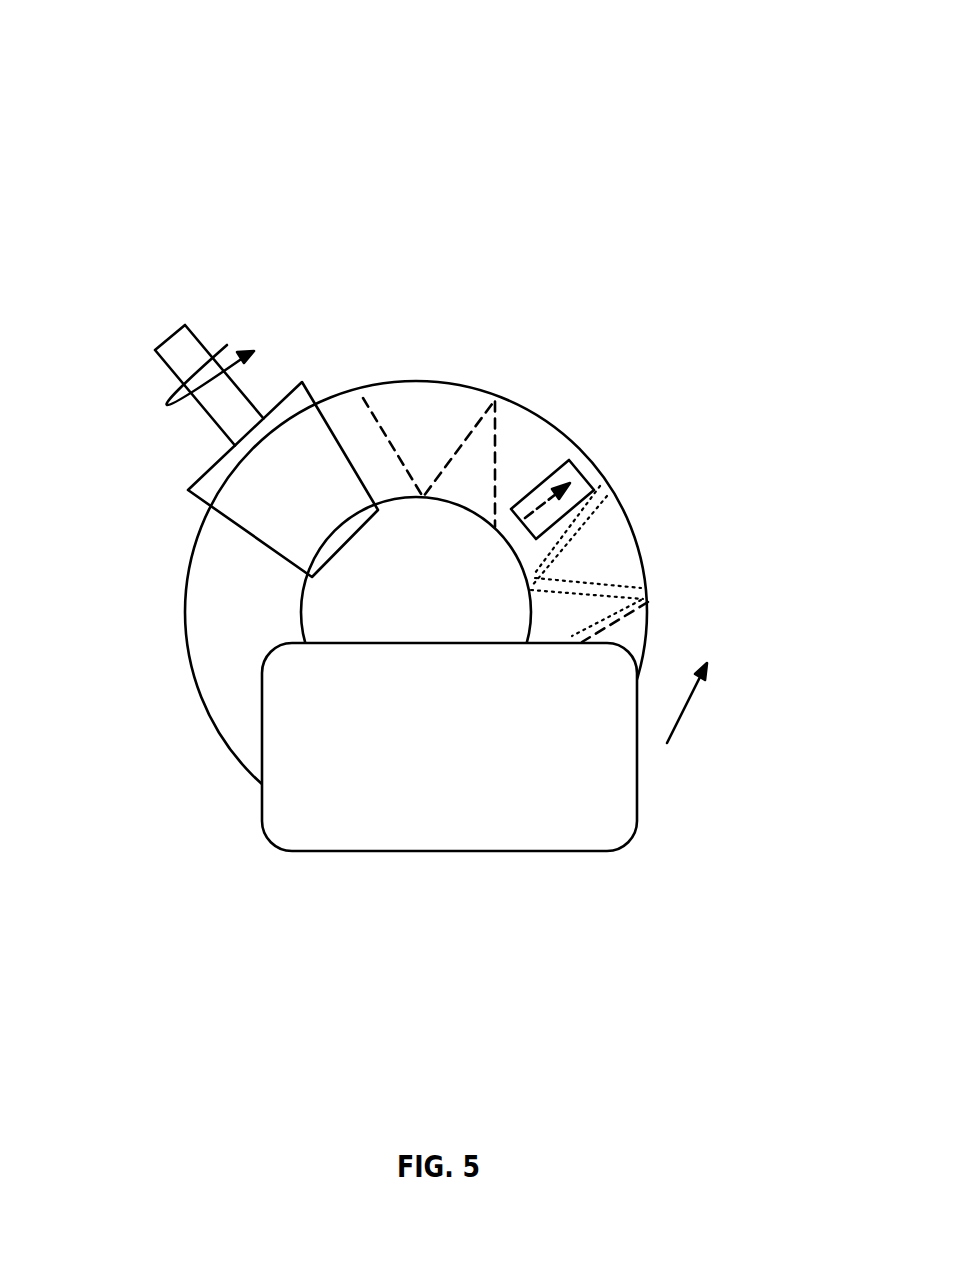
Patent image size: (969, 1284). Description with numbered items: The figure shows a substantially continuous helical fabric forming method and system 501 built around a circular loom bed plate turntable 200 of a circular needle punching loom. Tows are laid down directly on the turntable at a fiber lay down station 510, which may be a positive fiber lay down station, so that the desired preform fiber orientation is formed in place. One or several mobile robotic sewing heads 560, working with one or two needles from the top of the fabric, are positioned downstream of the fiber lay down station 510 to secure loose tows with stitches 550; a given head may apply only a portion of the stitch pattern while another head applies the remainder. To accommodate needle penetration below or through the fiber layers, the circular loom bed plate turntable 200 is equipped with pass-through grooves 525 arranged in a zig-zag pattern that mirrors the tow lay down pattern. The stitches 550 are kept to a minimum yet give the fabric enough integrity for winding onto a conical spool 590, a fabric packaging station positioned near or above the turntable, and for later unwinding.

The method and system 501 is at (586, 126).
The circular loom bed plate turntable 200 is at (222, 657).
The fiber lay down station 510 is at (593, 807).
The grooves 525 is at (593, 496).
The stitches 550 is at (468, 432).
The robotic sewing heads 560 is at (558, 486).
The conical spool 590 is at (293, 455).